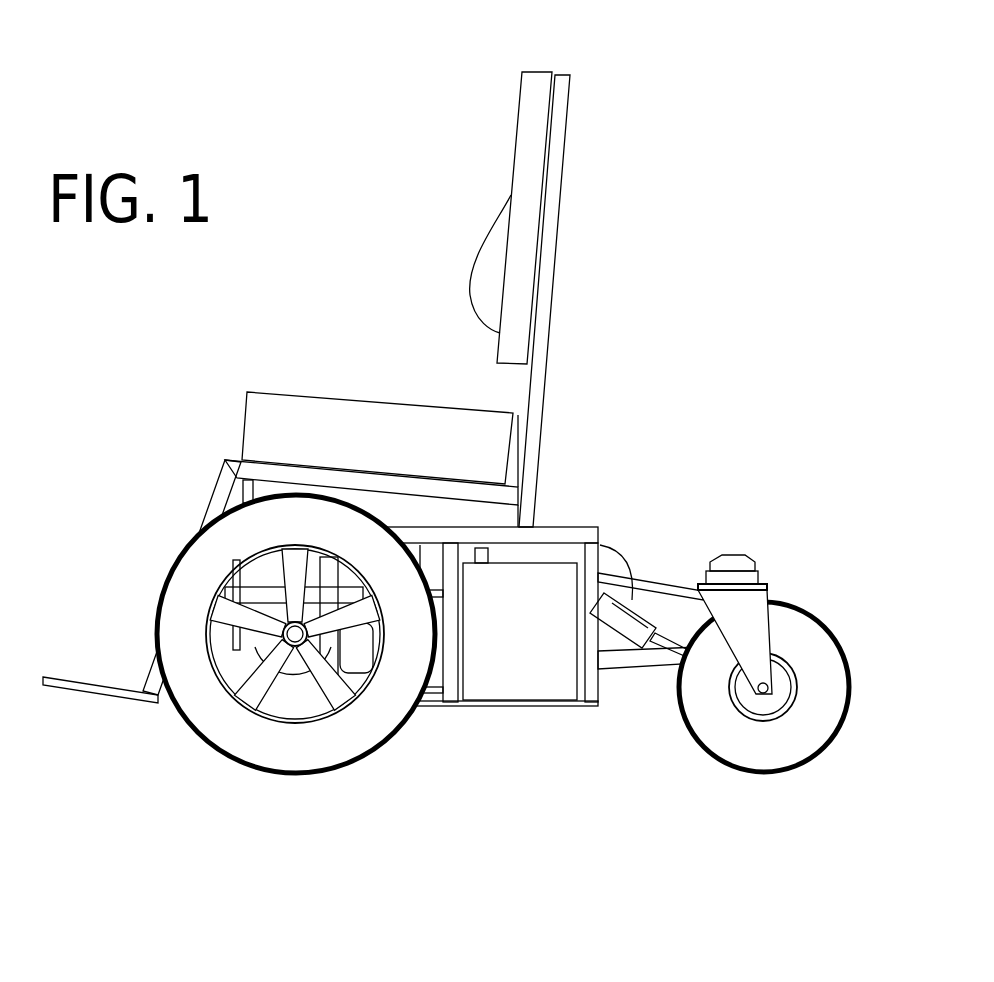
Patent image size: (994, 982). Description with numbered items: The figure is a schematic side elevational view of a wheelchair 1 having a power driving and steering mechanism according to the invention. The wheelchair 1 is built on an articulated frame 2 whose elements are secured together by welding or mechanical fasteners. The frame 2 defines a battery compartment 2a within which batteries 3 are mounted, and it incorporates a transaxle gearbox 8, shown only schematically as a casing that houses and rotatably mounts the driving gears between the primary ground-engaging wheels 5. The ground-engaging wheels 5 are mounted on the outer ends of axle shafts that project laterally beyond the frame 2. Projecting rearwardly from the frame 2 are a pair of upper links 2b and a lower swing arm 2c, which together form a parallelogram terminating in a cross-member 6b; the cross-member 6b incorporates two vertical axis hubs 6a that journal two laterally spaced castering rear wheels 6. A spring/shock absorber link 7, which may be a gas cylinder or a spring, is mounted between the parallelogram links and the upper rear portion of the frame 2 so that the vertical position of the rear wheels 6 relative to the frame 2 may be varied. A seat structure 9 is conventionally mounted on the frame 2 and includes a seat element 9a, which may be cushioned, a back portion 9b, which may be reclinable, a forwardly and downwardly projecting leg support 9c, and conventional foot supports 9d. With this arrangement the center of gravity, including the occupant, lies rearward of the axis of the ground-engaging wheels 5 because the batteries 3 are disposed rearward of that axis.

The wheelchair 1 is at (545, 423).
The articulated frame 2 is at (565, 522).
The battery compartment 2a is at (585, 690).
The upper links 2b is at (674, 578).
The lower swing arm 2c is at (631, 673).
The batteries 3 is at (519, 653).
The ground-engaging wheels 5 is at (374, 752).
The castering rear wheels 6 is at (797, 779).
The vertical axis hubs 6a is at (771, 590).
The cross-member 6b is at (765, 572).
The spring/shock absorber link 7 is at (623, 557).
The transaxle gearbox 8 is at (240, 658).
The seat structure 9 is at (459, 483).
The seat element 9a is at (297, 392).
The back portion 9b is at (566, 162).
The leg support 9c is at (207, 497).
The foot supports 9d is at (70, 676).